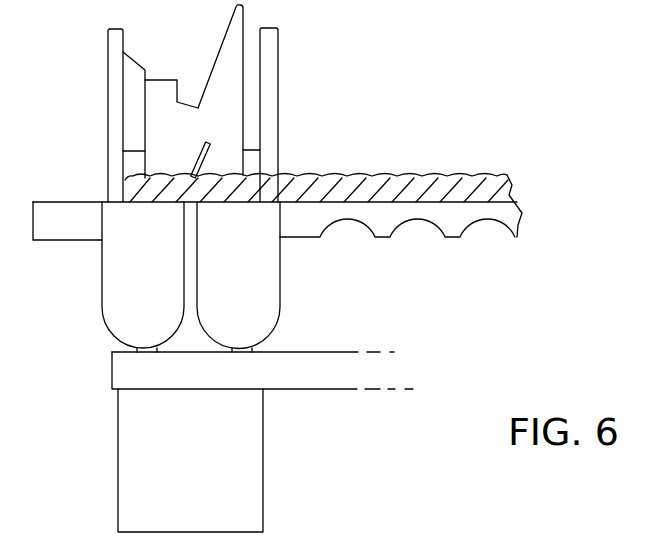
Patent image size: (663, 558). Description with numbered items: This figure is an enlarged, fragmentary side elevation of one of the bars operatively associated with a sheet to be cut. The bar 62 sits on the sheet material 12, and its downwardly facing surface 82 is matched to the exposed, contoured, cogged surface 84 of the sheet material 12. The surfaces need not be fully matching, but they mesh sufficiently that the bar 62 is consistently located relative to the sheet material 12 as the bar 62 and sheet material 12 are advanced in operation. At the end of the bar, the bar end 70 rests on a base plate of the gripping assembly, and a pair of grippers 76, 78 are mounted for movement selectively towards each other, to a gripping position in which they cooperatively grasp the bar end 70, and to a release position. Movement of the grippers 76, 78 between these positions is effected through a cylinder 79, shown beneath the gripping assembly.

The sheet material 12 is at (433, 185).
The bar 62 is at (225, 107).
The bar end 70 is at (182, 123).
The gripper 76 is at (130, 90).
The gripper 78 is at (253, 128).
The cylinder 79 is at (245, 492).
The downwardly facing surface 82 is at (158, 178).
The cogged surface 84 is at (402, 175).